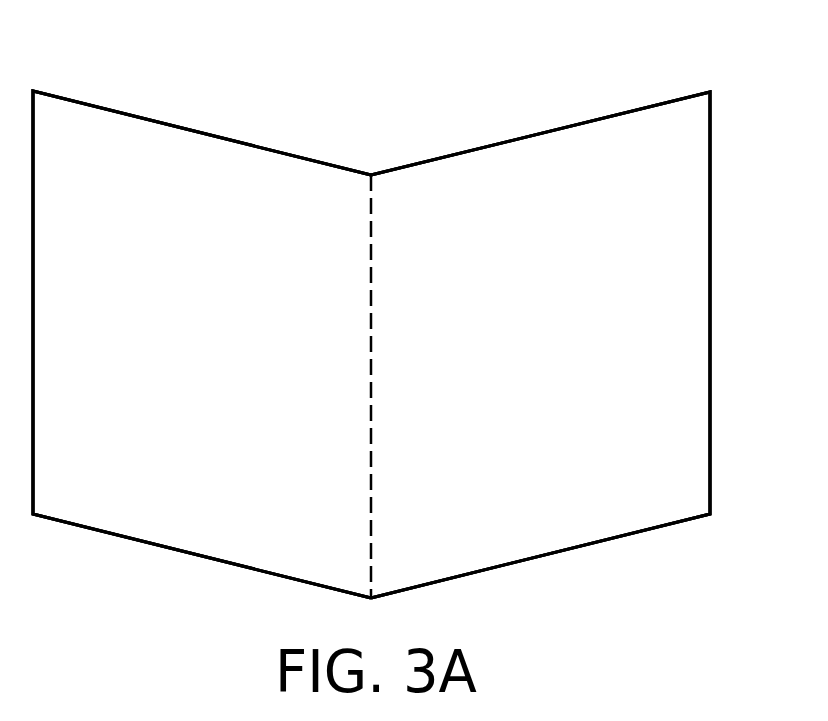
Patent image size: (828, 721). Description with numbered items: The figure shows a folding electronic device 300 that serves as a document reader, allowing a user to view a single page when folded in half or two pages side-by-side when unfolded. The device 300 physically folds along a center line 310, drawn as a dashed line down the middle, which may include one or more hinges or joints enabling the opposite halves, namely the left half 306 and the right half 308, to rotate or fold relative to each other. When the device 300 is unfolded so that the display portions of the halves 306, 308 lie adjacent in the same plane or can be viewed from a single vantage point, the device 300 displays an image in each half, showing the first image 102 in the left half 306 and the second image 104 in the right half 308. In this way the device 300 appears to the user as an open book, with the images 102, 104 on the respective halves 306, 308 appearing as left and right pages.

The folding electronic device 300 is at (600, 118).
The left half 306 is at (142, 542).
The right half 308 is at (615, 540).
The first image 102 is at (162, 367).
The second image 104 is at (543, 366).
The center line 310 is at (371, 373).